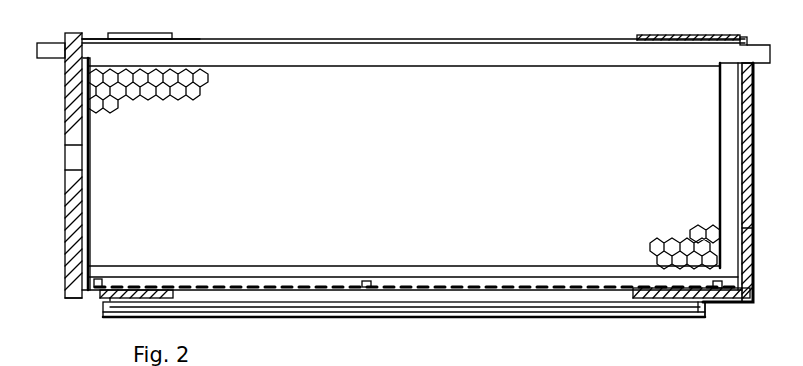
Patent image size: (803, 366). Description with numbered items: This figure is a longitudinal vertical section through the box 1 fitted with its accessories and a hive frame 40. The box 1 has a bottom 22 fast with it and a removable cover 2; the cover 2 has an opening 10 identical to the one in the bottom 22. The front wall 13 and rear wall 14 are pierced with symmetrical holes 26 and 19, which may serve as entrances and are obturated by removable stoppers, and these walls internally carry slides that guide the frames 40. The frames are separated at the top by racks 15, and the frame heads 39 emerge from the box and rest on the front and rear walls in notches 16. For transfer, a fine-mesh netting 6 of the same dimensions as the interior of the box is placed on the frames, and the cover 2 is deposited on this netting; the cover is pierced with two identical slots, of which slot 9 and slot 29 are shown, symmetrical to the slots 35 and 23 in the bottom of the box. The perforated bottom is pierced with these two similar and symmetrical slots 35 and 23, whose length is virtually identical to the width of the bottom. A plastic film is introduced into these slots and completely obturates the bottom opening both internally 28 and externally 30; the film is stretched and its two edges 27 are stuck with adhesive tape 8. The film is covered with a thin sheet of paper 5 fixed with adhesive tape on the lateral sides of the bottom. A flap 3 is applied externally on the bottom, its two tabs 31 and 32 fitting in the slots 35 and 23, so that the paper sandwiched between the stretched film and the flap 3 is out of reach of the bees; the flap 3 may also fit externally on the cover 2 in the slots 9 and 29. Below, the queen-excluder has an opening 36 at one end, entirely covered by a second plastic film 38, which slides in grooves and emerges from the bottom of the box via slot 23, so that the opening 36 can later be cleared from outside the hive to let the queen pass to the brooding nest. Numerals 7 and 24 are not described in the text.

The box 1 is at (66, 249).
The removable cover 2 is at (160, 35).
The flap 3 is at (603, 318).
The sheet of paper 5 is at (325, 302).
The fine-mesh netting 6 is at (506, 35).
The grille 7 is at (228, 287).
The adhesive tape 8 is at (418, 302).
The slot 9 is at (110, 35).
The opening 10 is at (448, 40).
The front wall 13 is at (75, 204).
The rear wall 14 is at (745, 228).
The rack 15 is at (75, 47).
The notch 16 is at (750, 48).
The hole 19 is at (745, 160).
The bottom 22 is at (88, 292).
The slot 23 is at (704, 310).
The fastener 24 is at (98, 280).
The hole 26 is at (73, 160).
The edge 27 is at (415, 300).
The internal side of bottom opening 28 is at (287, 287).
The slot 29 is at (706, 35).
The external side of bottom opening 30 is at (470, 300).
The tab 31 is at (110, 297).
The tab 32 is at (700, 312).
The slot 35 is at (92, 300).
The opening 36 is at (595, 285).
The second plastic film 38 is at (573, 287).
The frame head 39 is at (753, 63).
The frame 40 is at (410, 58).